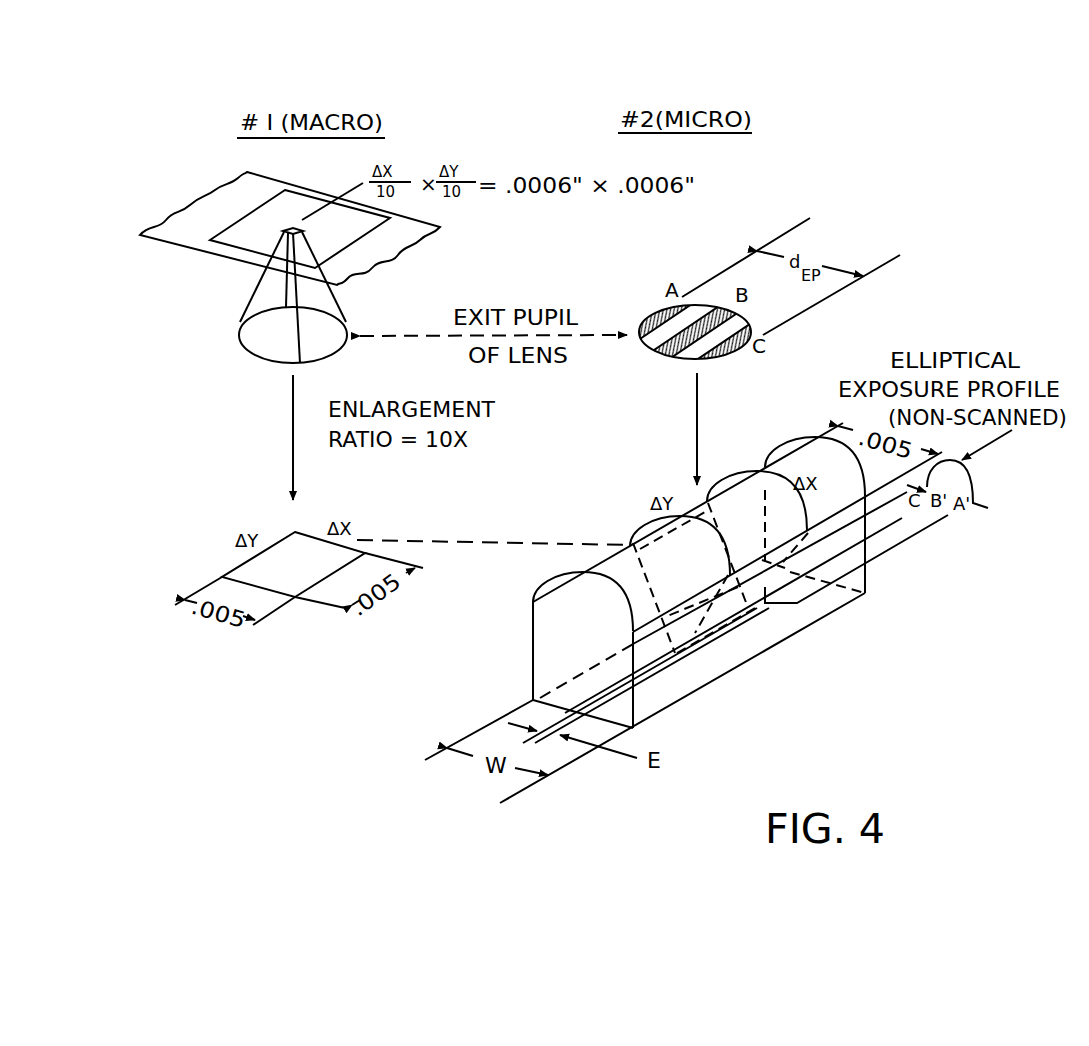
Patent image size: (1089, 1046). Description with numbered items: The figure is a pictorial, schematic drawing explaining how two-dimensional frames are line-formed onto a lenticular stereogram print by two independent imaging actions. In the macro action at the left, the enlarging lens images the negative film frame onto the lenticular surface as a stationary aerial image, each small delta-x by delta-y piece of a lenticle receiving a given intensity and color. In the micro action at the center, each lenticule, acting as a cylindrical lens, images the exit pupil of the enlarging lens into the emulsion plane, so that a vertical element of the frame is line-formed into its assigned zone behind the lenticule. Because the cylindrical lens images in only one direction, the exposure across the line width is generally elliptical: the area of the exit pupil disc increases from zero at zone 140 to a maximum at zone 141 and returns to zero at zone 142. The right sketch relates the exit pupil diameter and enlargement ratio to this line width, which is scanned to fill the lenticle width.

The zone 140 is at (651, 318).
The zone 141 is at (669, 351).
The zone 142 is at (738, 352).